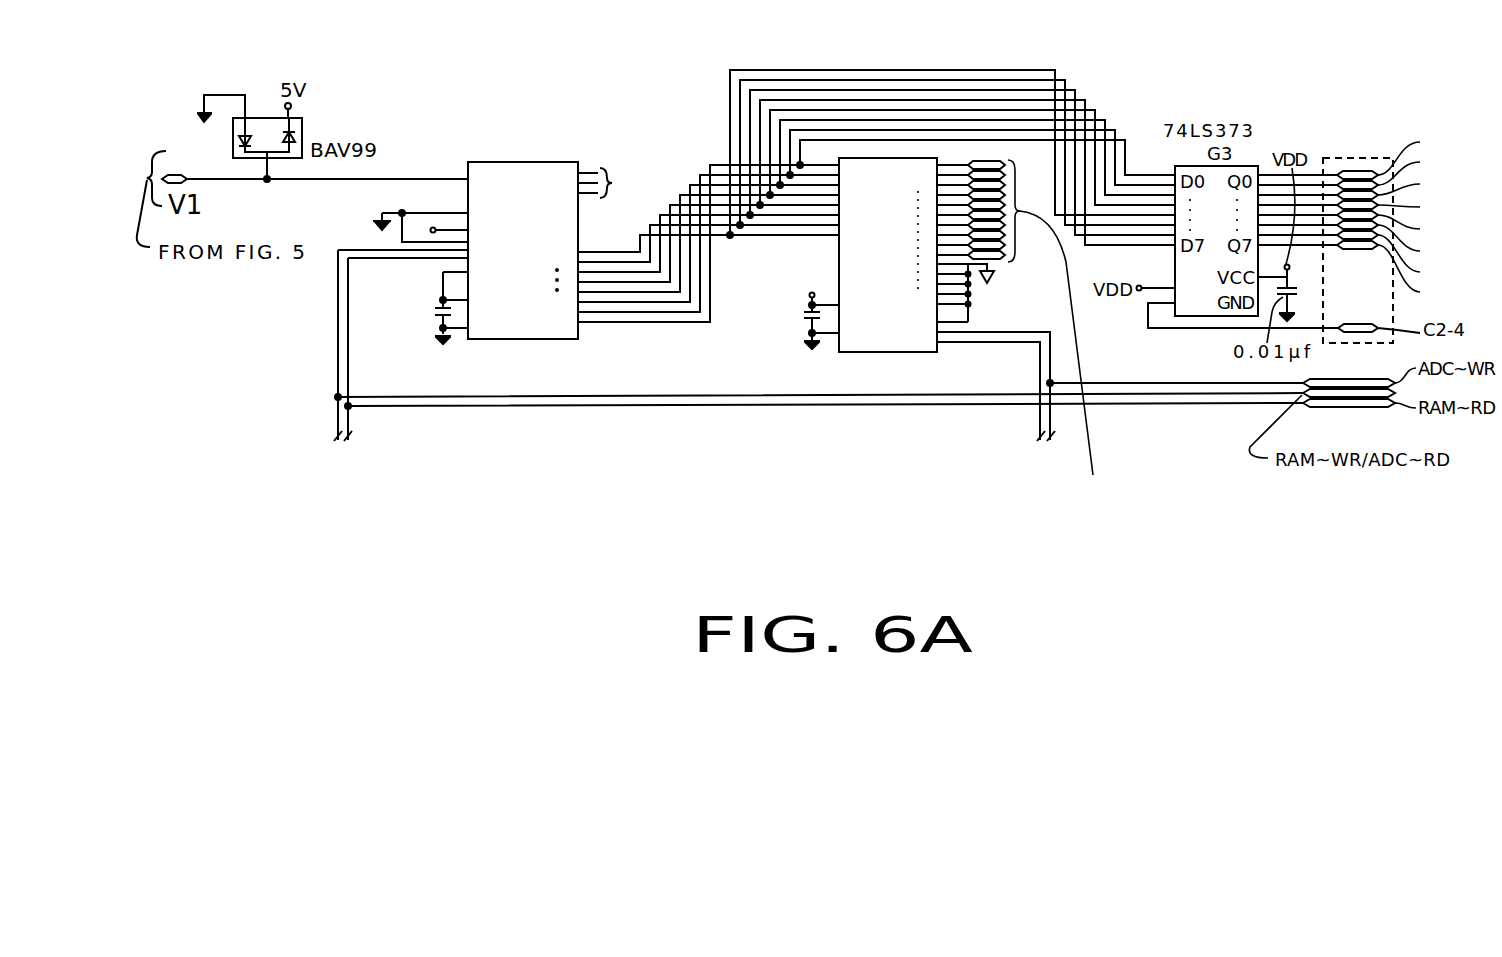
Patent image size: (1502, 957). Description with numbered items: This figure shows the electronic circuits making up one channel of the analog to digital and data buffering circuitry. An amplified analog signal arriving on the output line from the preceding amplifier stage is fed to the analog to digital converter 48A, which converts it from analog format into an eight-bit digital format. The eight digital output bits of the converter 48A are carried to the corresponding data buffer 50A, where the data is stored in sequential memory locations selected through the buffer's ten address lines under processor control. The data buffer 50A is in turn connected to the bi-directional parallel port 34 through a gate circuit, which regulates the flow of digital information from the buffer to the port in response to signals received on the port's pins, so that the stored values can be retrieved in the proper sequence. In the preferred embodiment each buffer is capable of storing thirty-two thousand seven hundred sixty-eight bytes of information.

The analog to digital converter 48A is at (509, 251).
The data buffer 50A is at (945, 383).
The bi-directional parallel port 34 is at (1352, 157).